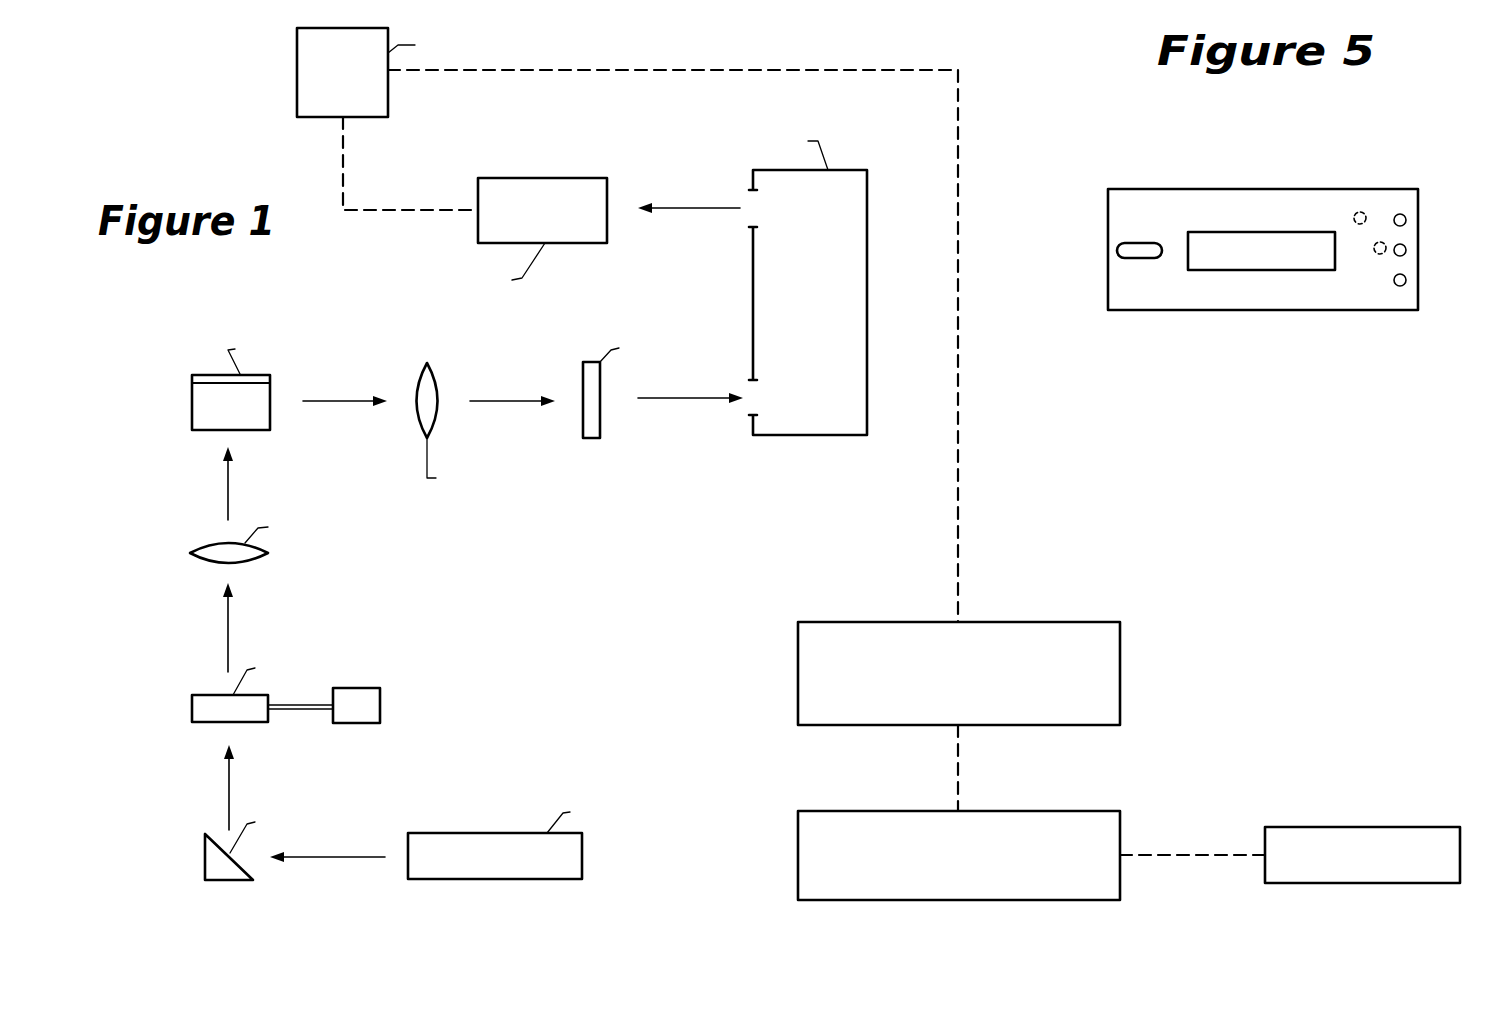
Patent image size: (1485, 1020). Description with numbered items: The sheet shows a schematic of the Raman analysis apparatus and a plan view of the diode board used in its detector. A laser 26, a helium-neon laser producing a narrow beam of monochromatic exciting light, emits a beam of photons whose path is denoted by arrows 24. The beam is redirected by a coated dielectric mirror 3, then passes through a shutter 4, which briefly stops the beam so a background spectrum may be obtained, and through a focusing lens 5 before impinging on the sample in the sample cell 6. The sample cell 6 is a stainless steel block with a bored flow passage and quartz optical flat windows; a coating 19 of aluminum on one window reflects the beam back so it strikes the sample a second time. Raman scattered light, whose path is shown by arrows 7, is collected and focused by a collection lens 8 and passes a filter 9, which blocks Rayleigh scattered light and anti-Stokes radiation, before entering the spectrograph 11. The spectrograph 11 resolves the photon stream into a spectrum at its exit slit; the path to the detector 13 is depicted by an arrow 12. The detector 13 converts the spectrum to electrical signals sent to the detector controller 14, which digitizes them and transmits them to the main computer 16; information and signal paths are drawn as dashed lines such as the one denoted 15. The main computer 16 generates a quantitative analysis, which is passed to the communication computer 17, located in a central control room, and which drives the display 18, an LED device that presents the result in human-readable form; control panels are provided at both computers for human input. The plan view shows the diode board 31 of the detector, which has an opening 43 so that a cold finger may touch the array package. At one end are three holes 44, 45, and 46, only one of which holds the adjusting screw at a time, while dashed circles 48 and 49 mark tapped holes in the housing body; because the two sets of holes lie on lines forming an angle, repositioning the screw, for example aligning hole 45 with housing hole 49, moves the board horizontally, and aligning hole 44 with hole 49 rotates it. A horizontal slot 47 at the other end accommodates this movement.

In FIG. 1, the mirror 3 is at (223, 880).
In FIG. 1, the shutter 4 is at (247, 722).
In FIG. 1, the focusing lens 5 is at (207, 543).
In FIG. 1, the sample cell 6 is at (203, 431).
In FIG. 1, the arrows 7 is at (327, 401).
In FIG. 1, the collection lens 8 is at (437, 372).
In FIG. 1, the filter 9 is at (602, 415).
In FIG. 1, the spectrograph 11 is at (868, 283).
In FIG. 1, the arrow 12 is at (673, 208).
In FIG. 1, the detector 13 is at (548, 178).
In FIG. 1, the detector controller 14 is at (315, 117).
In FIG. 1, the dashed line 15 is at (345, 176).
In FIG. 1, the main computer 16 is at (1032, 622).
In FIG. 1, the communication computer 17 is at (1047, 811).
In FIG. 1, the display 18 is at (1368, 827).
In FIG. 1, the coating 19 is at (202, 373).
In FIG. 1, the arrows 24 is at (230, 493).
In FIG. 1, the laser 26 is at (502, 879).
In FIG. 5, the diode board 31 is at (1223, 189).
In FIG. 5, the opening 43 is at (1277, 263).
In FIG. 5, the hole 44 is at (1407, 217).
In FIG. 5, the hole 45 is at (1407, 247).
In FIG. 5, the hole 46 is at (1408, 277).
In FIG. 5, the horizontal slot 47 is at (1133, 242).
In FIG. 5, the dashed circle 48 is at (1354, 212).
In FIG. 5, the dashed circle 49 is at (1378, 255).